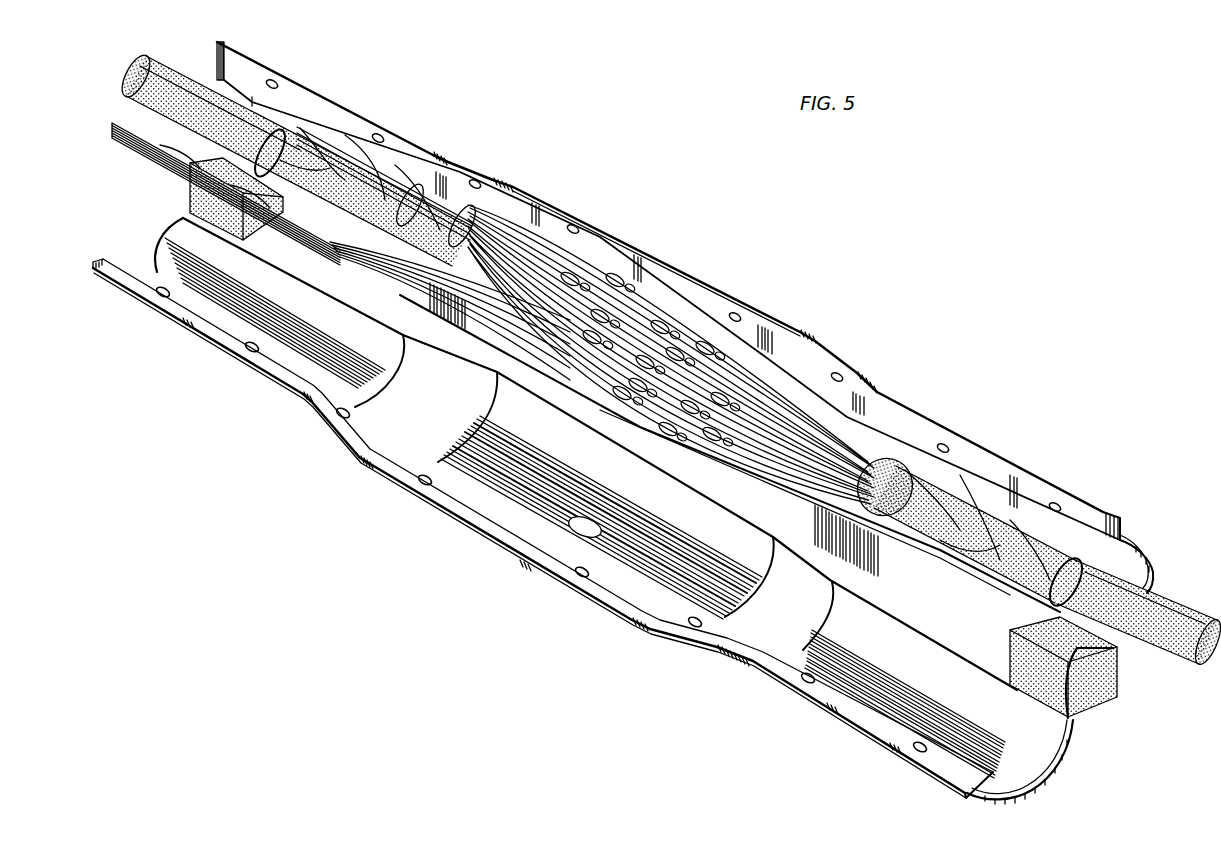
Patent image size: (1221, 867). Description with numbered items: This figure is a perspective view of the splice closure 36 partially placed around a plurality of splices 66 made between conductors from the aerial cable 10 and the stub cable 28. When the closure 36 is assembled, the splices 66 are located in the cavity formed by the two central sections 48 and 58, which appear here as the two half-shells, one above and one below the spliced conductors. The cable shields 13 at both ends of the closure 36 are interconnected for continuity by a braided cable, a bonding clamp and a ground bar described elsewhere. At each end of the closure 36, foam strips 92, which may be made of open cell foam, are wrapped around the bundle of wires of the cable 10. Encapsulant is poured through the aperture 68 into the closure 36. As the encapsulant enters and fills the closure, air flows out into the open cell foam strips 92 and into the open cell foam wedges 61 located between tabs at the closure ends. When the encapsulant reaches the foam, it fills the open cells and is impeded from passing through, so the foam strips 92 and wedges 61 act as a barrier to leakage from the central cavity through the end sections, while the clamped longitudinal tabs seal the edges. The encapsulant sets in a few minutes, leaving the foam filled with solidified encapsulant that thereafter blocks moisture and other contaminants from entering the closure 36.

The aerial cable 10 is at (132, 93).
The cable shields 13 is at (287, 128).
The stub cable 28 is at (190, 170).
The closure 36 is at (1036, 474).
The central section 48 is at (665, 575).
The central section 58 is at (760, 355).
The open cell foam wedges 61 is at (200, 198).
The splices 66 is at (643, 299).
The aperture 68 is at (567, 527).
The foam strips 92 is at (365, 178).